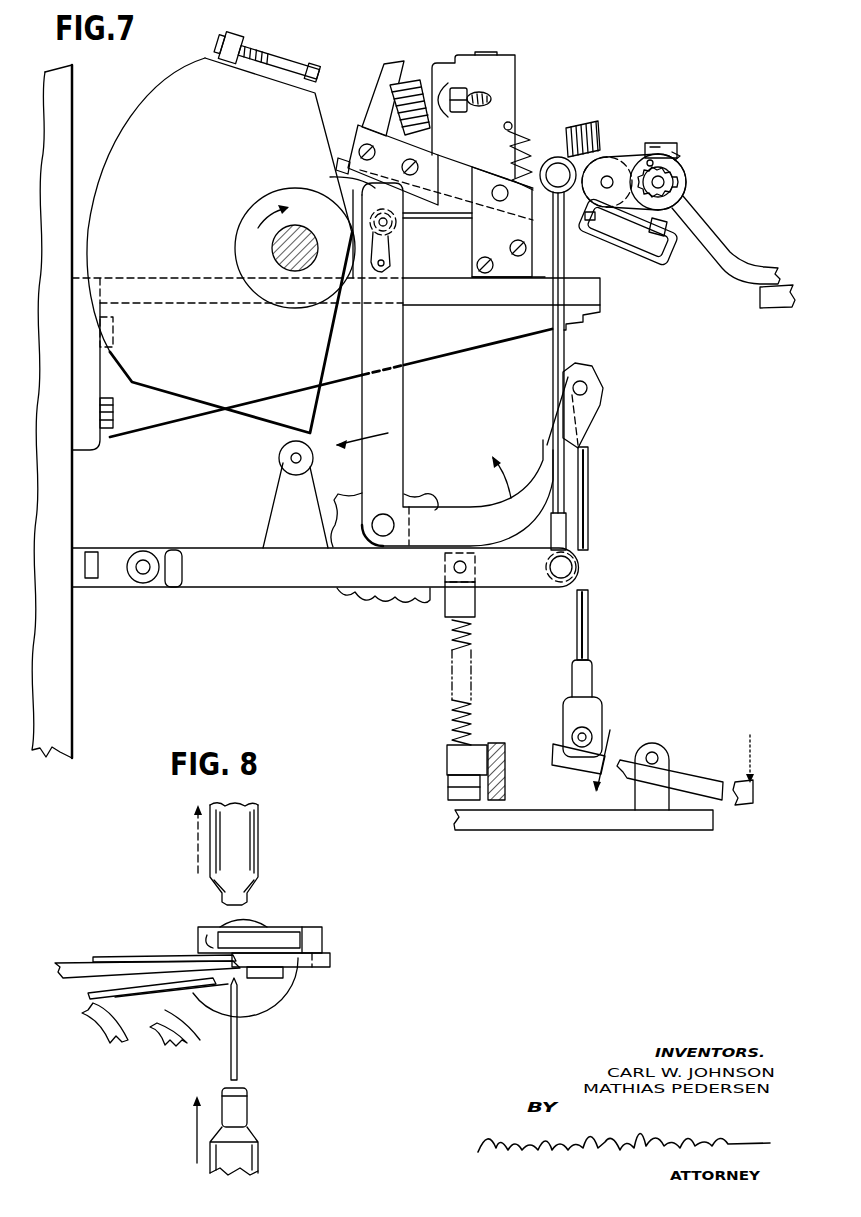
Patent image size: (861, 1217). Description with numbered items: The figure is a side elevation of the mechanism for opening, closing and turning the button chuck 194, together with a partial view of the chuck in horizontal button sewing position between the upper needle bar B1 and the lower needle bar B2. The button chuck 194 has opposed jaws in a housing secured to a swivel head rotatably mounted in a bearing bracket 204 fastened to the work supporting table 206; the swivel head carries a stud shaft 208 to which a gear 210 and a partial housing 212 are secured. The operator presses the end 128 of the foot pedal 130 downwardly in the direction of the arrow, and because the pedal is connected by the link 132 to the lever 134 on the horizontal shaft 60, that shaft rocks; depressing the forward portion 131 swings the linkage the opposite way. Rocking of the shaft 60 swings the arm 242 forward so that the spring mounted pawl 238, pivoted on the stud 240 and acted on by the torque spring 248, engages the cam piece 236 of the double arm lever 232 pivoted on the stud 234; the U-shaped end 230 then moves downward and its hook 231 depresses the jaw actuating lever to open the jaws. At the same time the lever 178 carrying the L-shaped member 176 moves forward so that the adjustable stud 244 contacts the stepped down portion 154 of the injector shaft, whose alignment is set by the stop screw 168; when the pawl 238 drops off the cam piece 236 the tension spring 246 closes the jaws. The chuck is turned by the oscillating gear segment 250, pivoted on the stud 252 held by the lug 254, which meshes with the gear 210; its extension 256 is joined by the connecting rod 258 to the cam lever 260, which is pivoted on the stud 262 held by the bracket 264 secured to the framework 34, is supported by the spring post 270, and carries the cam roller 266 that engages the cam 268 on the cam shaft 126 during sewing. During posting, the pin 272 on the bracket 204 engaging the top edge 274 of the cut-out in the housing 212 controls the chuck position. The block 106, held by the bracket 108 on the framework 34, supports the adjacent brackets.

In FIG. 7, the framework 34 is at (68, 517).
In FIG. 7, the horizontal shaft 60 is at (383, 528).
In FIG. 7, the block 106 is at (585, 272).
In FIG. 7, the bracket 108 is at (133, 422).
In FIG. 7, the cam shaft 126 is at (277, 245).
In FIG. 7, the forward end of foot pedal 128 is at (567, 760).
In FIG. 7, the foot pedal 130 is at (678, 752).
In FIG. 7, the forward portion of treadle 131 is at (753, 793).
In FIG. 7, the rod or link 132 is at (589, 514).
In FIG. 7, the lever 134 is at (547, 445).
In FIG. 7, the stepped down portion 154 is at (373, 87).
In FIG. 7, the adjustable stop screw 168 is at (474, 92).
In FIG. 7, the L-shaped horizontal member 176 is at (247, 43).
In FIG. 7, the lever 178 is at (408, 453).
In FIG. 7, the button chuck 194 is at (690, 155).
In FIG. 8, the button chuck 194 is at (288, 910).
In FIG. 7, the bearing bracket 204 is at (708, 240).
In FIG. 8, the bearing bracket 204 is at (185, 1027).
In FIG. 7, the work supporting table 206 is at (777, 322).
In FIG. 8, the work supporting table 206 is at (76, 1031).
In FIG. 7, the stud shaft 208 is at (688, 200).
In FIG. 7, the gear 210 is at (664, 183).
In FIG. 7, the housing 212 is at (676, 172).
In FIG. 7, the U-shaped end 230 is at (448, 168).
In FIG. 7, the hook 231 is at (655, 216).
In FIG. 7, the double arm lever 232 is at (540, 278).
In FIG. 7, the stud 234 is at (500, 201).
In FIG. 7, the cam piece 236 is at (420, 203).
In FIG. 7, the spring mounted pawl or finger 238 is at (336, 178).
In FIG. 7, the stud 240 is at (393, 240).
In FIG. 7, the arm 242 is at (397, 412).
In FIG. 7, the adjustably mounted stud 244 is at (326, 64).
In FIG. 7, the tension spring 246 is at (522, 143).
In FIG. 7, the torque spring 248 is at (400, 228).
In FIG. 7, the oscillating gear segment 250 is at (657, 118).
In FIG. 7, the stud 252 is at (616, 168).
In FIG. 7, the lug 254 is at (646, 145).
In FIG. 7, the extension 256 is at (607, 170).
In FIG. 7, the connecting rod 258 is at (564, 352).
In FIG. 7, the cam lever 260 is at (233, 558).
In FIG. 7, the stud 262 is at (145, 575).
In FIG. 7, the bracket 264 is at (110, 557).
In FIG. 7, the cam roller 266 is at (283, 453).
In FIG. 7, the cam 268 is at (107, 153).
In FIG. 7, the spring post 270 is at (472, 640).
In FIG. 7, the pin 272 is at (653, 161).
In FIG. 7, the top edge of cut-out 274 is at (679, 155).
In FIG. 8, the upper needle bar B1 is at (253, 852).
In FIG. 8, the lower needle bar B2 is at (245, 1148).